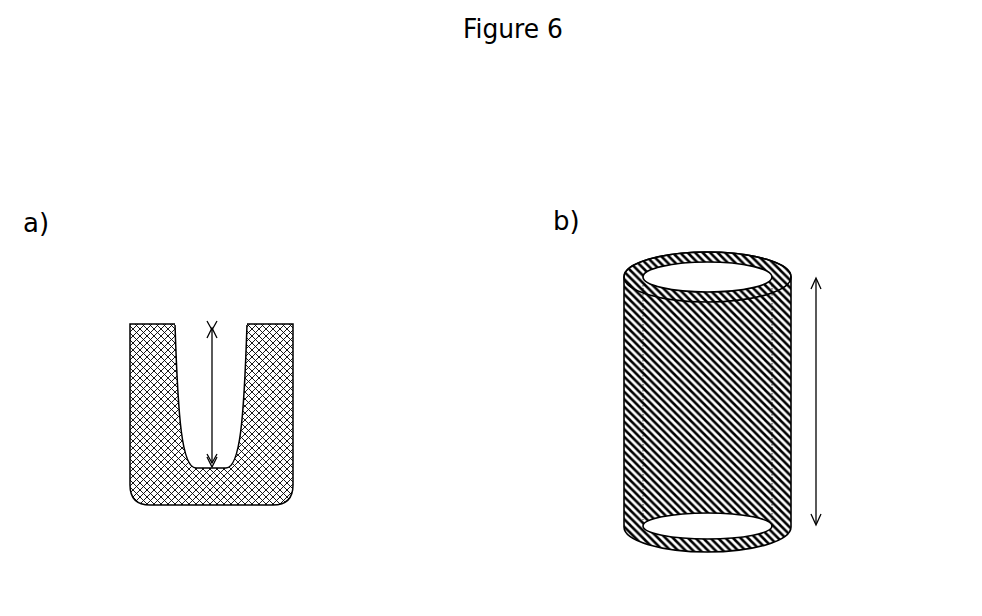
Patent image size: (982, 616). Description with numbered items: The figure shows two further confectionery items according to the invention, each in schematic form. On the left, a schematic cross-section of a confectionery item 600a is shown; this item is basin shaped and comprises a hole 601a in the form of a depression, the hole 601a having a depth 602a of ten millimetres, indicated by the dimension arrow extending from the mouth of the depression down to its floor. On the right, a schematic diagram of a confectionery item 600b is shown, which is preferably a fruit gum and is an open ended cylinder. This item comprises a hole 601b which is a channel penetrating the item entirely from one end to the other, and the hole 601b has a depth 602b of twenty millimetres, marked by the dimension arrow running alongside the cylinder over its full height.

The confectionery item 600a is at (243, 153).
The hole 601a is at (197, 333).
The depth 602a is at (213, 345).
The confectionery item 600b is at (748, 133).
The hole 601b is at (707, 276).
The depth 602b is at (816, 407).